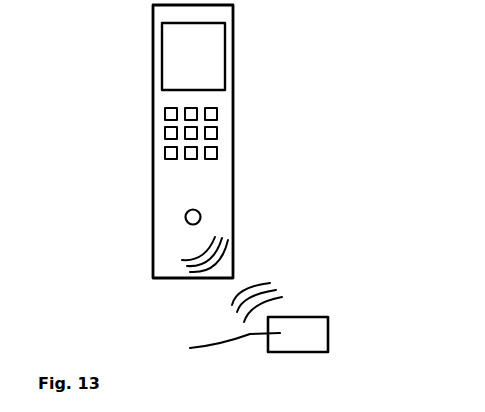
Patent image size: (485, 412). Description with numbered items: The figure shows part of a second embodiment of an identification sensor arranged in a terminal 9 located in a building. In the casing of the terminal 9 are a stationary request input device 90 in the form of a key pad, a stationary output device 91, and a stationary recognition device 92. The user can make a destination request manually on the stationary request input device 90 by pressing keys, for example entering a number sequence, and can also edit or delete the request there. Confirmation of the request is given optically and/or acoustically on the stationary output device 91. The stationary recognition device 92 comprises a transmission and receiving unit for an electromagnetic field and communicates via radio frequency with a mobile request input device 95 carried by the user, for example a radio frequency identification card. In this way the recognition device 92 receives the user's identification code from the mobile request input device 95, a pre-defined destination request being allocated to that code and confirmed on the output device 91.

The terminal 9 is at (135, 120).
The stationary output device 91 is at (213, 57).
The stationary request input device 90 is at (210, 132).
The stationary recognition device 92 is at (185, 214).
The mobile request input device 95 is at (305, 328).